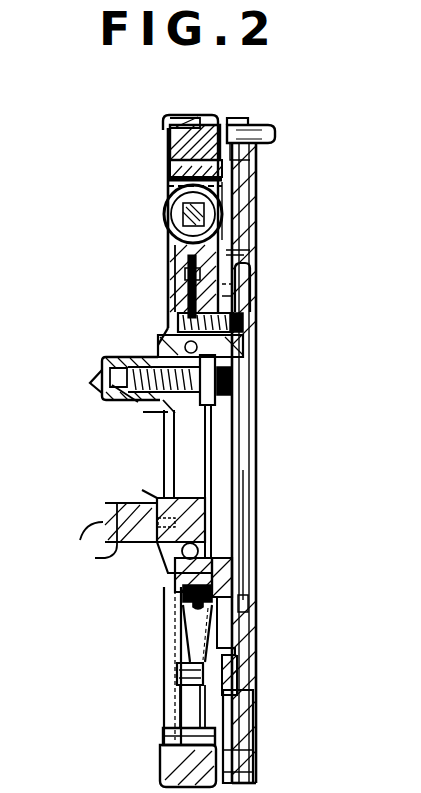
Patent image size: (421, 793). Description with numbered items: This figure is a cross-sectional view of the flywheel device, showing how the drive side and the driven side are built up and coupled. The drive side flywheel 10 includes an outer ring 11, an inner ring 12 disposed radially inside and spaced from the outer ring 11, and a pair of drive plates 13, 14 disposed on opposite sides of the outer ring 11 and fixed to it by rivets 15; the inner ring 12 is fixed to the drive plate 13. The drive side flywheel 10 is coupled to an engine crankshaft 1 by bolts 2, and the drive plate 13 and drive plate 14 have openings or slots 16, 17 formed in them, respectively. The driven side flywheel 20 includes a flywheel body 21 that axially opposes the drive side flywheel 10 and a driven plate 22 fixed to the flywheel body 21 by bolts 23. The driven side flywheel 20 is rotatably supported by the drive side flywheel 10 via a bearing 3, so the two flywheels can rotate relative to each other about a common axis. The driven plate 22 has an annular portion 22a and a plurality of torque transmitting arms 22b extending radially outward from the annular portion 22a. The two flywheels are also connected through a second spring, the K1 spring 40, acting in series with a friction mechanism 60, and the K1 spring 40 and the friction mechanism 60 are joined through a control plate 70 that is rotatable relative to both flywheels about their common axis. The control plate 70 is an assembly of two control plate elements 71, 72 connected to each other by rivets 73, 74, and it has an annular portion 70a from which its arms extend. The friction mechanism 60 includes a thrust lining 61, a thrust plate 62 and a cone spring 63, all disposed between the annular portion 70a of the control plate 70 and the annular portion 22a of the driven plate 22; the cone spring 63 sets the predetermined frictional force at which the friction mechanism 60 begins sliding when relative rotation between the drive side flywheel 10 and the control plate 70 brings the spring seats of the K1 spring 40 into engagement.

The engine crankshaft 1 is at (115, 542).
The bolt 2 is at (234, 376).
The bearing 3 is at (236, 344).
The drive side flywheel 10 is at (176, 118).
The outer ring 11 is at (170, 127).
The inner ring 12 is at (214, 428).
The drive plate 13 is at (168, 143).
The drive plate 14 is at (207, 127).
The rivet 15 is at (180, 154).
The opening or slot 16 is at (168, 200).
The opening or slot 17 is at (228, 192).
The driven side flywheel 20 is at (240, 122).
The flywheel body 21 is at (242, 158).
The driven plate 22 is at (242, 554).
The annular portion 22a is at (244, 601).
The torque transmitting arm 22b is at (230, 247).
The bolt 23 is at (236, 322).
The second spring (K1 spring) 40 is at (168, 228).
The friction mechanism 60 is at (248, 575).
The thrust lining 61 is at (174, 311).
The thrust plate 62 is at (226, 284).
The cone spring 63 is at (233, 296).
The control plate 70 is at (166, 186).
The annular portion 70a is at (166, 620).
The control plate element 71 is at (172, 626).
The control plate element 72 is at (214, 622).
The rivet 73 is at (174, 279).
The rivet 74 is at (208, 688).